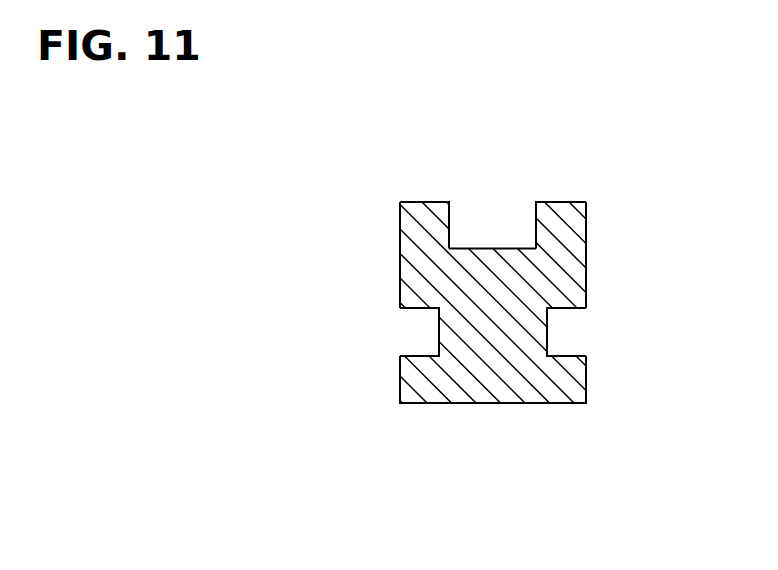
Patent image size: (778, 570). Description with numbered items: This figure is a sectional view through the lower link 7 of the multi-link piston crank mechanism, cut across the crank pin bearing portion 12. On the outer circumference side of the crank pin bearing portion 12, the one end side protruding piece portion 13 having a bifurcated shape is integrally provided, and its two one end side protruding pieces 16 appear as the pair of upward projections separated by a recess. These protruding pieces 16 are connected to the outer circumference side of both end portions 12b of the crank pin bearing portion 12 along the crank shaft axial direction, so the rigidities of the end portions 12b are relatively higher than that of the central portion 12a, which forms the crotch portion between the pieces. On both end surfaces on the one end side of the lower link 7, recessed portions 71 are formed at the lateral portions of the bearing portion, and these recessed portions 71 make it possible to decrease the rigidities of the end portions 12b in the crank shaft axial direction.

The lower link 7 is at (600, 229).
The crank pin bearing portion 12 is at (523, 405).
The central portion of the crank pin bearing portion 12a is at (492, 405).
The both end portions of the crank pin bearing portion 12b is at (422, 405).
The one end side protruding piece portion 13 is at (562, 126).
The one end side protruding pieces 16 is at (426, 209).
The recessed portions 71 is at (422, 311).